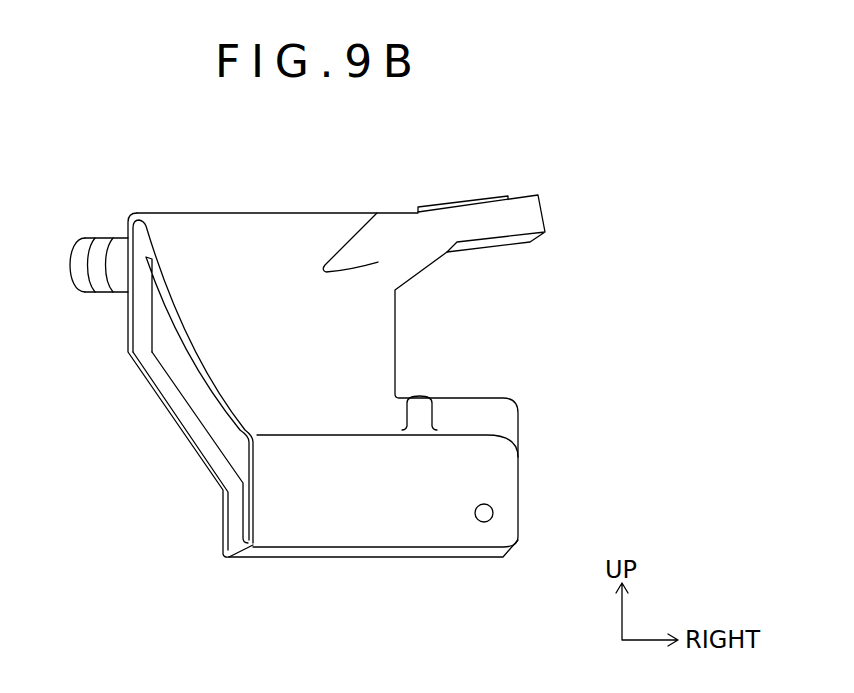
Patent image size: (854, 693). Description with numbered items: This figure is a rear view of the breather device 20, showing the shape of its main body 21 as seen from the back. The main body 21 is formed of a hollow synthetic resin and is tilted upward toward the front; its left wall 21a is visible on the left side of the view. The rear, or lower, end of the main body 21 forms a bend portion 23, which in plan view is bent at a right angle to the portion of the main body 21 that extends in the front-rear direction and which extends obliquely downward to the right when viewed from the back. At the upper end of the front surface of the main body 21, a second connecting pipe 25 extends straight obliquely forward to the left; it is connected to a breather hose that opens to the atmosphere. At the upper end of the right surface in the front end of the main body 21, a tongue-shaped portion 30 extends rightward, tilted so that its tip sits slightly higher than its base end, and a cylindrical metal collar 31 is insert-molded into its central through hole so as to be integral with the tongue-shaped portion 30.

The breather device 20 is at (585, 157).
The main body 21 is at (394, 330).
The left wall 21a is at (201, 399).
The bend portion 23 is at (513, 485).
The second connecting pipe 25 is at (100, 237).
The tongue-shaped portion 30 is at (530, 197).
The cylindrical metal collar 31 is at (433, 203).